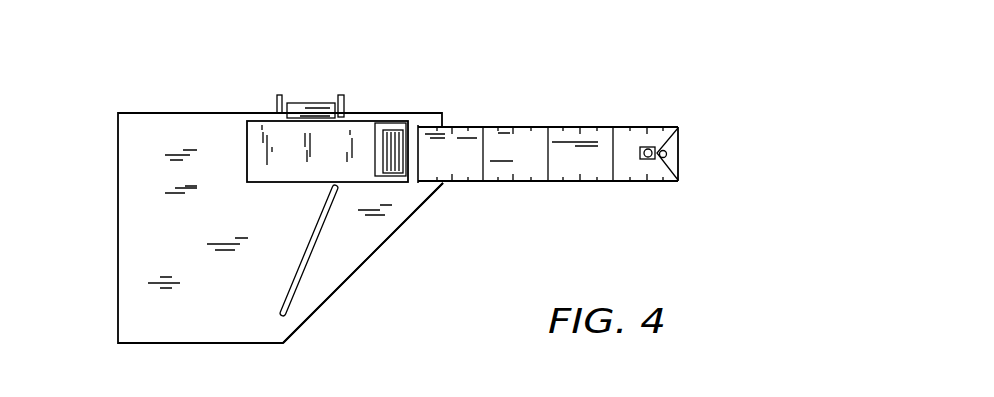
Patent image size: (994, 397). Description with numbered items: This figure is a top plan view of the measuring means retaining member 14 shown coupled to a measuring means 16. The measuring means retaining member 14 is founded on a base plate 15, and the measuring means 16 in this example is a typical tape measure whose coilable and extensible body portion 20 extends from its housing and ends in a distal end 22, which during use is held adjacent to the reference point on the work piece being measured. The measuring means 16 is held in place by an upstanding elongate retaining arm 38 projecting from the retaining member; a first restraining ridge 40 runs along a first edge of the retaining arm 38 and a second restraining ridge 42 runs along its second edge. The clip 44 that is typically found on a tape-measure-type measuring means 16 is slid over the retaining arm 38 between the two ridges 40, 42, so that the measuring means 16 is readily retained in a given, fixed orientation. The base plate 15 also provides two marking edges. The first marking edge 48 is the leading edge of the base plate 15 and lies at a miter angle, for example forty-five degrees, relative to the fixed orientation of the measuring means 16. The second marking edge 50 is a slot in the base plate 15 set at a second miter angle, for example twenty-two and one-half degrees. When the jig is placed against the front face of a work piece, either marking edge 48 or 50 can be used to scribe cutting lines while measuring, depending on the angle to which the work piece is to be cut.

The measuring means retaining member 14 is at (189, 66).
The base plate 15 is at (192, 237).
The measuring means 16 is at (224, 133).
The body portion 20 is at (632, 124).
The distal end 22 is at (680, 148).
The retaining arm 38 is at (393, 67).
The first restraining ridge 40 is at (277, 104).
The second restraining ridge 42 is at (347, 105).
The clip 44 is at (321, 106).
The first marking edge 48 is at (414, 214).
The second marking edge 50 is at (310, 242).